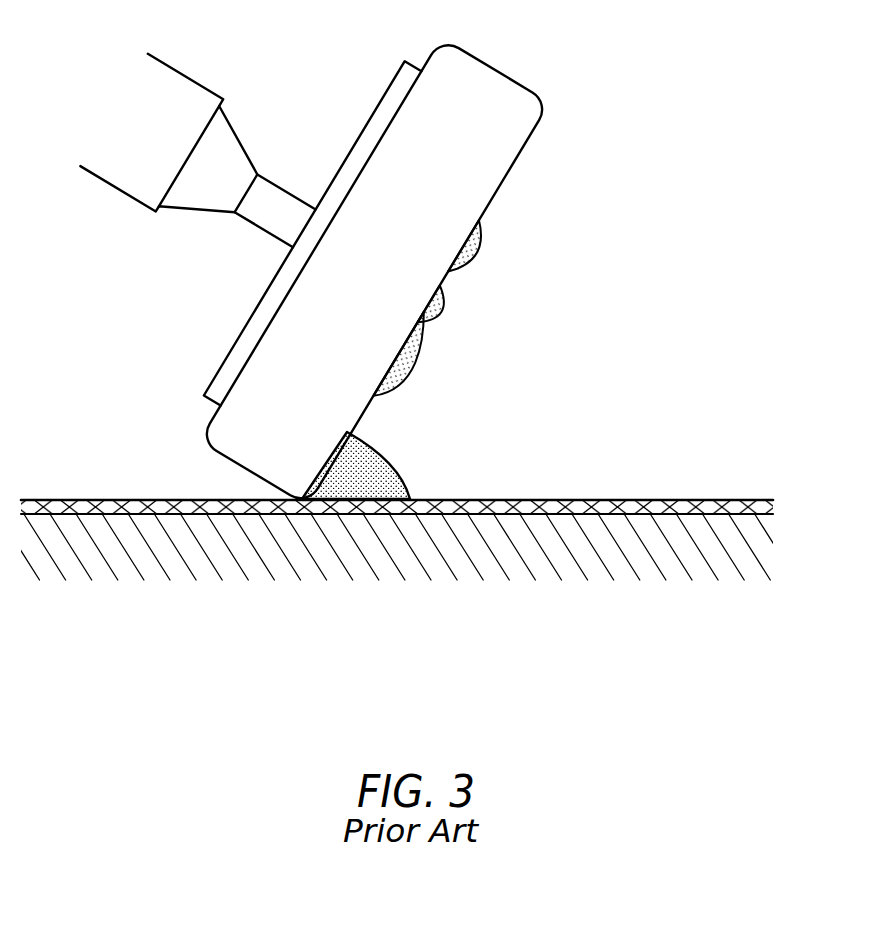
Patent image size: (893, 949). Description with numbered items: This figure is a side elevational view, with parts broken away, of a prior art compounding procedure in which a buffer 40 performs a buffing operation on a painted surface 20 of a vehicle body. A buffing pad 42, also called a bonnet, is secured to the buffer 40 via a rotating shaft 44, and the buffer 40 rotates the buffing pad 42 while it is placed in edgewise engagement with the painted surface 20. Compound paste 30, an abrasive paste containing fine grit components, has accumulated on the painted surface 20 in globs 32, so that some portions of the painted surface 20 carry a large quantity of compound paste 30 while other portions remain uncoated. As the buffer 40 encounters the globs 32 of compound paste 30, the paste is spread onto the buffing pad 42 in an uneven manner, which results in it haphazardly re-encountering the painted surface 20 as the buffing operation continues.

The painted surface 20 is at (523, 498).
The compound paste 30 is at (410, 372).
The globs 32 is at (397, 470).
The buffer 40 is at (174, 66).
The buffing pad 42 is at (546, 102).
The rotating shaft 44 is at (270, 235).